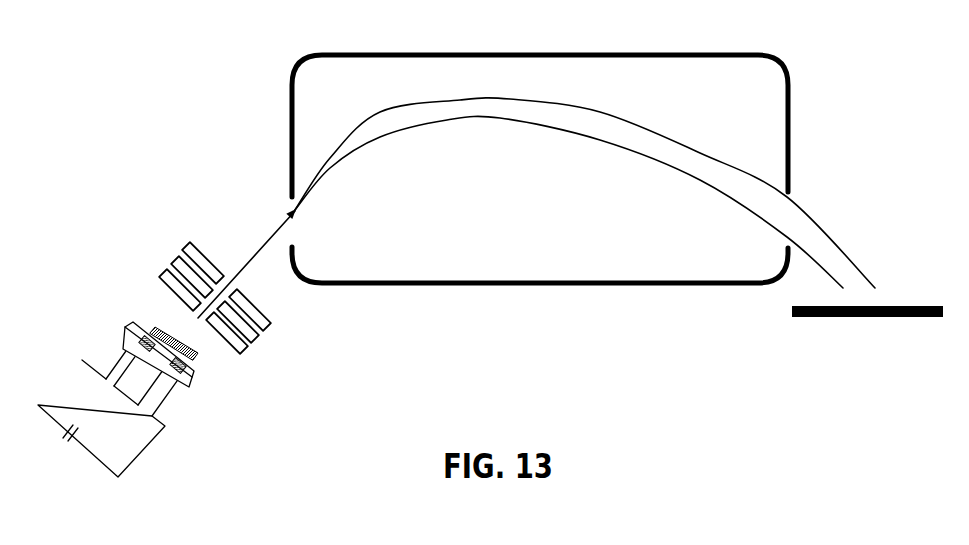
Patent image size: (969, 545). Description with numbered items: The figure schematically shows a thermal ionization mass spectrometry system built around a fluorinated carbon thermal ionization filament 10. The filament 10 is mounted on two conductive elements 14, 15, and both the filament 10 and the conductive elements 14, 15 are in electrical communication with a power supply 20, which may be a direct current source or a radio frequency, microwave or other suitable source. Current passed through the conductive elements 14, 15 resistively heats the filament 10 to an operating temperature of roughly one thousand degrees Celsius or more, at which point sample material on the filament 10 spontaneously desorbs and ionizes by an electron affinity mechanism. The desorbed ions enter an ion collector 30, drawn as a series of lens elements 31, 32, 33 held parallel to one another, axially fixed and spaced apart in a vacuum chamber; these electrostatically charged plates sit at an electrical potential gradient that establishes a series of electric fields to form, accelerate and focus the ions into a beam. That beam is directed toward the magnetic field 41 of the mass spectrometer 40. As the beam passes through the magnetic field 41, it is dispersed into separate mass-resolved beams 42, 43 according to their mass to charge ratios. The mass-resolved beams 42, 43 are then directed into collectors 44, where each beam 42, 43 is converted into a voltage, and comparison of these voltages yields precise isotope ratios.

The carbon thermal ionization filament 10 is at (193, 355).
The conductive element 14 is at (157, 403).
The conductive element 15 is at (118, 372).
The power supply 20 is at (70, 443).
The ion collector 30 is at (262, 356).
The lens element 31 is at (165, 278).
The lens element 32 is at (172, 266).
The lens element 33 is at (186, 251).
The mass spectrometer 40 is at (790, 101).
The magnetic field 41 is at (492, 224).
The mass-resolved beam 42 is at (748, 227).
The mass-resolved beam 43 is at (807, 224).
The collectors 44 is at (857, 318).